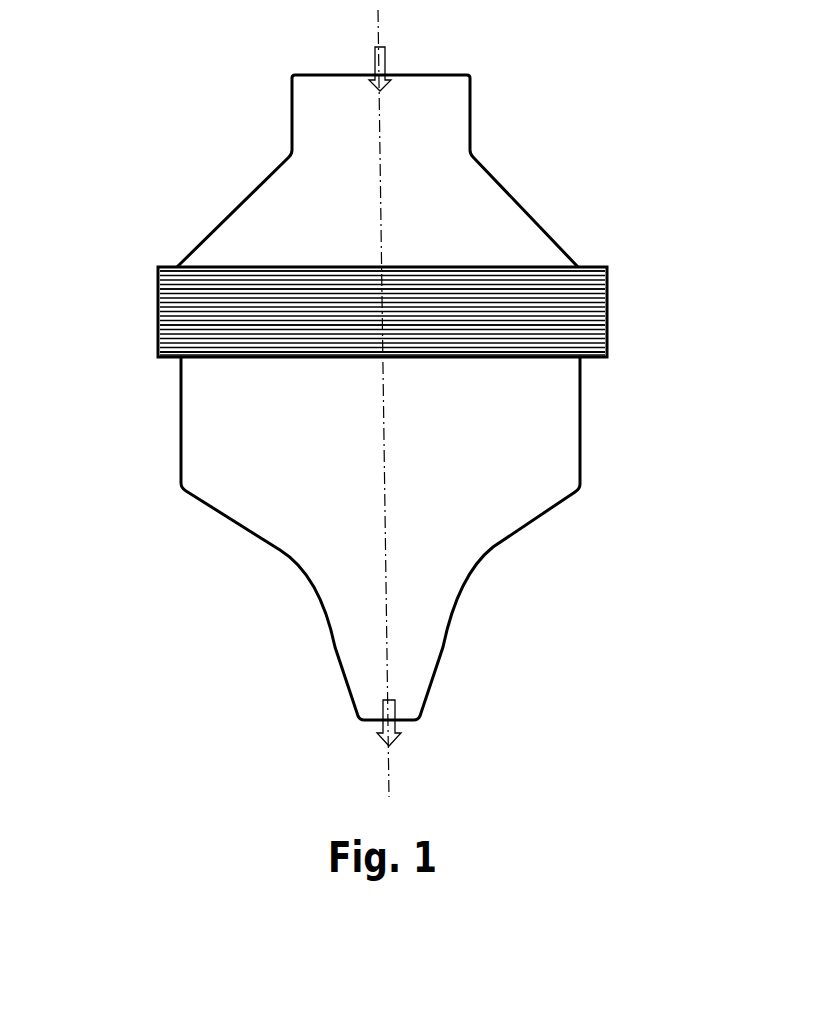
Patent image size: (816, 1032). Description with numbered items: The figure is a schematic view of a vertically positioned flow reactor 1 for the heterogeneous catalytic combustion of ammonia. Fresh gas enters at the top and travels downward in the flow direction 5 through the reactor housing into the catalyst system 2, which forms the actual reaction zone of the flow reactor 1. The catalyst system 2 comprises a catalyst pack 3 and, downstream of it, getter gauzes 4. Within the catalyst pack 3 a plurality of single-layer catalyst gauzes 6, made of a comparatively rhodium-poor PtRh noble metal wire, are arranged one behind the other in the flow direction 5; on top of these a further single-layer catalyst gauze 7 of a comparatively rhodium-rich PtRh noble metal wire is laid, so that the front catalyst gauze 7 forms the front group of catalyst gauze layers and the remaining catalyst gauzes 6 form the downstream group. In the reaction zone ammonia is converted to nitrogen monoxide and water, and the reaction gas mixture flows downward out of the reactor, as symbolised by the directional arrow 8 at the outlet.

The flow reactor 1 is at (540, 193).
The catalyst system 2 is at (621, 287).
The catalyst pack 3 is at (153, 297).
The getter gauzes 4 is at (172, 345).
The flow direction 5 is at (383, 68).
The single-layer catalyst gauzes 6 is at (213, 325).
The further single-layer catalyst gauze 7 is at (206, 277).
The directional arrow 8 is at (395, 735).